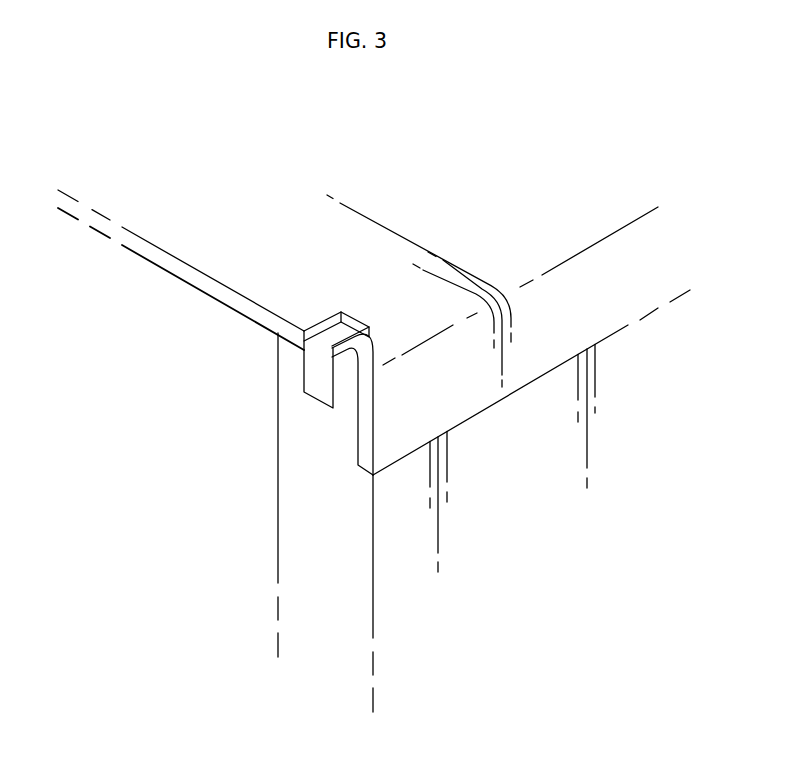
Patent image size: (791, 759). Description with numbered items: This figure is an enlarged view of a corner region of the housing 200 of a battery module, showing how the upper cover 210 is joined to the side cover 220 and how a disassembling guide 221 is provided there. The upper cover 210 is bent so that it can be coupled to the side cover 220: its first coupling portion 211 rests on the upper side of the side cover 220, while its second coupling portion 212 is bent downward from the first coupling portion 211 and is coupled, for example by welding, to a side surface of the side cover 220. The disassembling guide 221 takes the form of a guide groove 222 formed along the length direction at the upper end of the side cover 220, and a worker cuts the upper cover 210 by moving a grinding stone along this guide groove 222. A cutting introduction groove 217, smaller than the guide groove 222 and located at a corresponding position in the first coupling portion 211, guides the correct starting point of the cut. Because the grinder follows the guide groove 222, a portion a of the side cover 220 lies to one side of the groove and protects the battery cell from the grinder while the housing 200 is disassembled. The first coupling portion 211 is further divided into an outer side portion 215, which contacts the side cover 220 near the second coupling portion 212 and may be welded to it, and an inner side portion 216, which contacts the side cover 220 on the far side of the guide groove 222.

The housing 200 is at (246, 140).
The upper cover 210 is at (95, 374).
The first coupling portion 211 is at (176, 314).
The second coupling portion 212 is at (595, 325).
The outer side portion 215 is at (360, 352).
The inner side portion 216 is at (292, 323).
The cutting introduction groove 217 is at (330, 329).
The side cover 220 is at (305, 492).
The disassembling guide 221 is at (188, 407).
The guide groove 222 is at (322, 374).
The portion of the side cover a is at (291, 353).